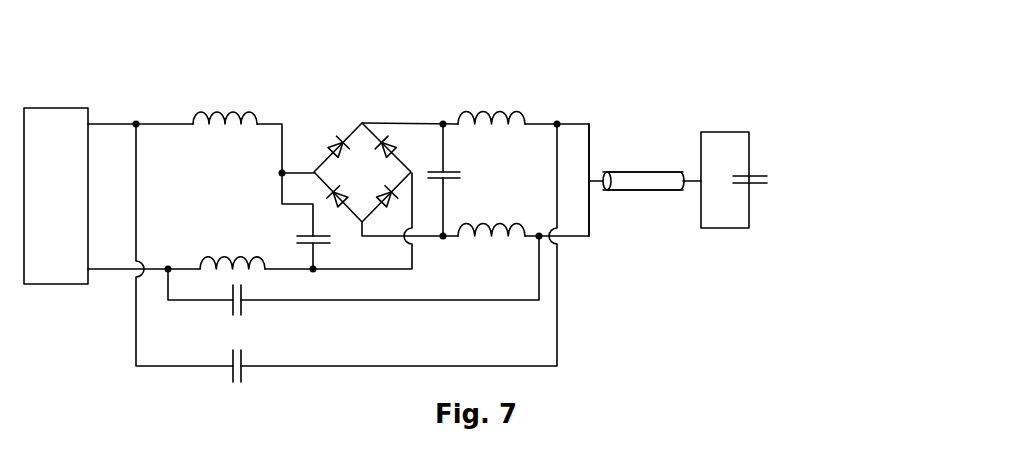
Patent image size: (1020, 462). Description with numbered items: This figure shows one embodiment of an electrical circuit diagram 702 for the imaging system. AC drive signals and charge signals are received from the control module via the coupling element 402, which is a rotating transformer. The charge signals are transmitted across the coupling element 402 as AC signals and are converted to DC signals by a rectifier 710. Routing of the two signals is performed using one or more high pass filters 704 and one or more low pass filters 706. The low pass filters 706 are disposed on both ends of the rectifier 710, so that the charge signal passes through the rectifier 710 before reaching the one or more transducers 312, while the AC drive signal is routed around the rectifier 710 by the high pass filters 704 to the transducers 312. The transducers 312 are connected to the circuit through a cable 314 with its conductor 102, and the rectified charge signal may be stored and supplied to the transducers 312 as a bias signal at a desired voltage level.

The coupling element 402 is at (68, 106).
The low pass filter 706 is at (241, 70).
The rectifier 710 is at (355, 128).
The high pass filter 704 is at (210, 405).
The electrical circuit diagram 702 is at (660, 76).
The cable 314 is at (657, 178).
The cable conductor 102 is at (618, 188).
The transducer 312 is at (797, 156).